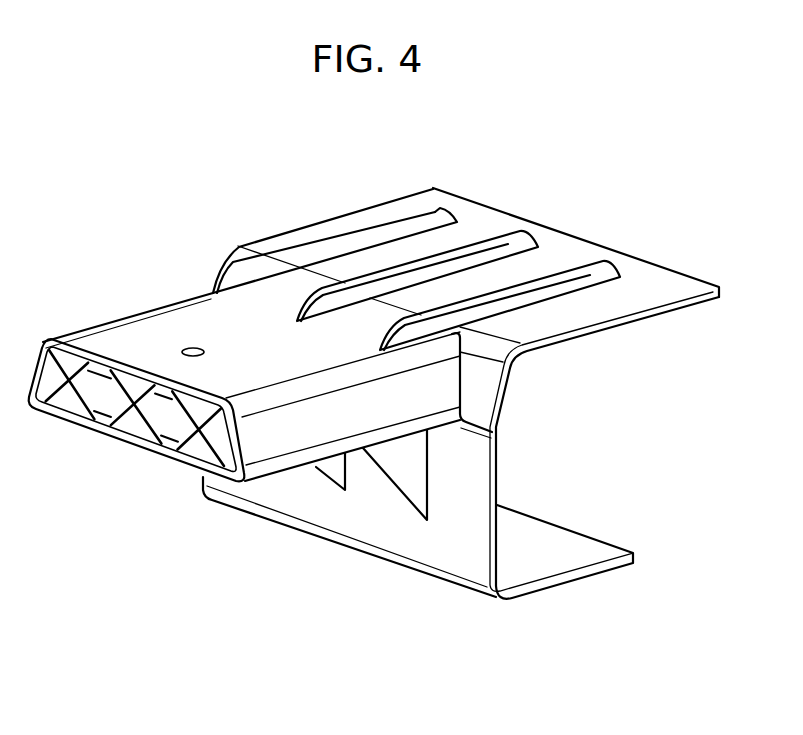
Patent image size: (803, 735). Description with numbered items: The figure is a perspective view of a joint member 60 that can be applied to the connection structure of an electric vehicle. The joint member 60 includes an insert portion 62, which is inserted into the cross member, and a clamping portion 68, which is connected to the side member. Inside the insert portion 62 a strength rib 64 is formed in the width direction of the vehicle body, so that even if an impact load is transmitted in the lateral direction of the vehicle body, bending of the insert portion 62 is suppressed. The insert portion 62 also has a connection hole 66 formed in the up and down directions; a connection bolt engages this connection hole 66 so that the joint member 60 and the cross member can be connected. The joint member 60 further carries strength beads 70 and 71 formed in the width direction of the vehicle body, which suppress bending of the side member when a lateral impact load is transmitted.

The joint member 60 is at (205, 213).
The insert portion 62 is at (103, 338).
The strength rib 64 is at (75, 382).
The connection hole 66 is at (187, 347).
The clamping portion 68 is at (568, 583).
The strength bead 70 is at (455, 205).
The strength bead 71 is at (328, 482).